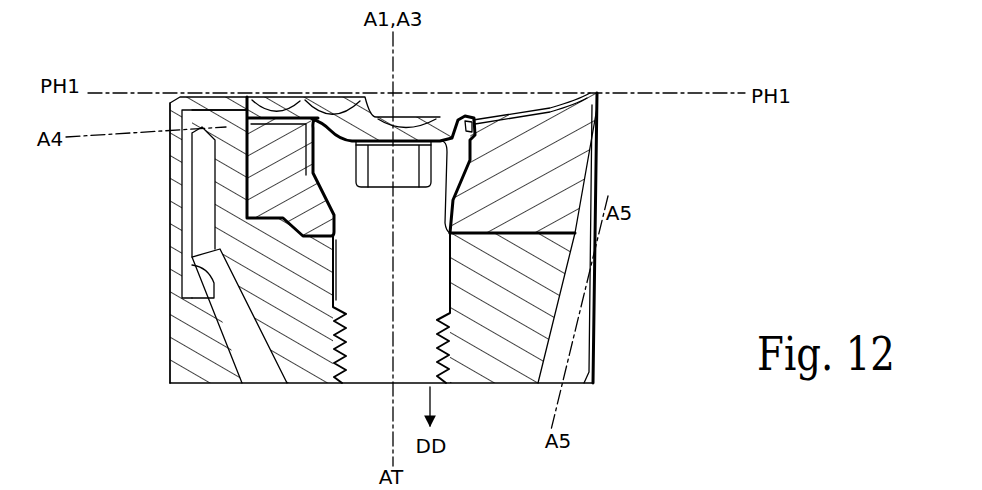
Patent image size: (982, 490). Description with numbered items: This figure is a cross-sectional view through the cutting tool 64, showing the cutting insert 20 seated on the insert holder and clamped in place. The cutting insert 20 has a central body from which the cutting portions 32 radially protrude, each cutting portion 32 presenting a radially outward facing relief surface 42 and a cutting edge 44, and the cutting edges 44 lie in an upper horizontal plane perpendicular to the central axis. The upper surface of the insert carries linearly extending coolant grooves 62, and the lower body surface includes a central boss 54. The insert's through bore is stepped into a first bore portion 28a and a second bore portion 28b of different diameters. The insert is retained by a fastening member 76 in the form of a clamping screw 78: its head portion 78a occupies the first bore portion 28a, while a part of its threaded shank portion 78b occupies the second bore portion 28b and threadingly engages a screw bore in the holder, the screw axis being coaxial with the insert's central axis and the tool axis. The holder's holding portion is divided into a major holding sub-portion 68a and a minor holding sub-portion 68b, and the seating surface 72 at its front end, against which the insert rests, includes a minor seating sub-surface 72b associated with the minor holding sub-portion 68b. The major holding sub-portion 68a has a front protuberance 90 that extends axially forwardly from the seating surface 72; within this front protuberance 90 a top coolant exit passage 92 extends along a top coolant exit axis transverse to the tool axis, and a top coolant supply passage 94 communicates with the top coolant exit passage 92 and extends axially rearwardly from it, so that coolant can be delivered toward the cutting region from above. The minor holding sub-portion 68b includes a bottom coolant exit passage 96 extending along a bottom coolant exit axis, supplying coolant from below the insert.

The cutting insert 20 is at (505, 192).
The first bore portion 28a is at (468, 118).
The second bore portion 28b is at (438, 138).
The cutting portion 32 is at (248, 198).
The relief surface 42 is at (600, 145).
The cutting edge 44 is at (607, 93).
The central boss 54 is at (304, 224).
The coolant groove 62 is at (291, 118).
The cutting tool 64 is at (600, 58).
The major holding sub-portion 68a is at (304, 344).
The minor holding sub-portion 68b is at (557, 270).
The seating surface 72 is at (542, 226).
The minor seating sub-surface 72b is at (570, 228).
The fastening member 76 is at (429, 316).
The clamping screw 78 is at (377, 316).
The head portion 78a is at (322, 172).
The threaded shank portion 78b is at (359, 268).
The front protuberance 90 is at (171, 164).
The top coolant exit passage 92 is at (222, 108).
The top coolant supply passage 94 is at (196, 176).
The bottom coolant exit passage 96 is at (593, 342).